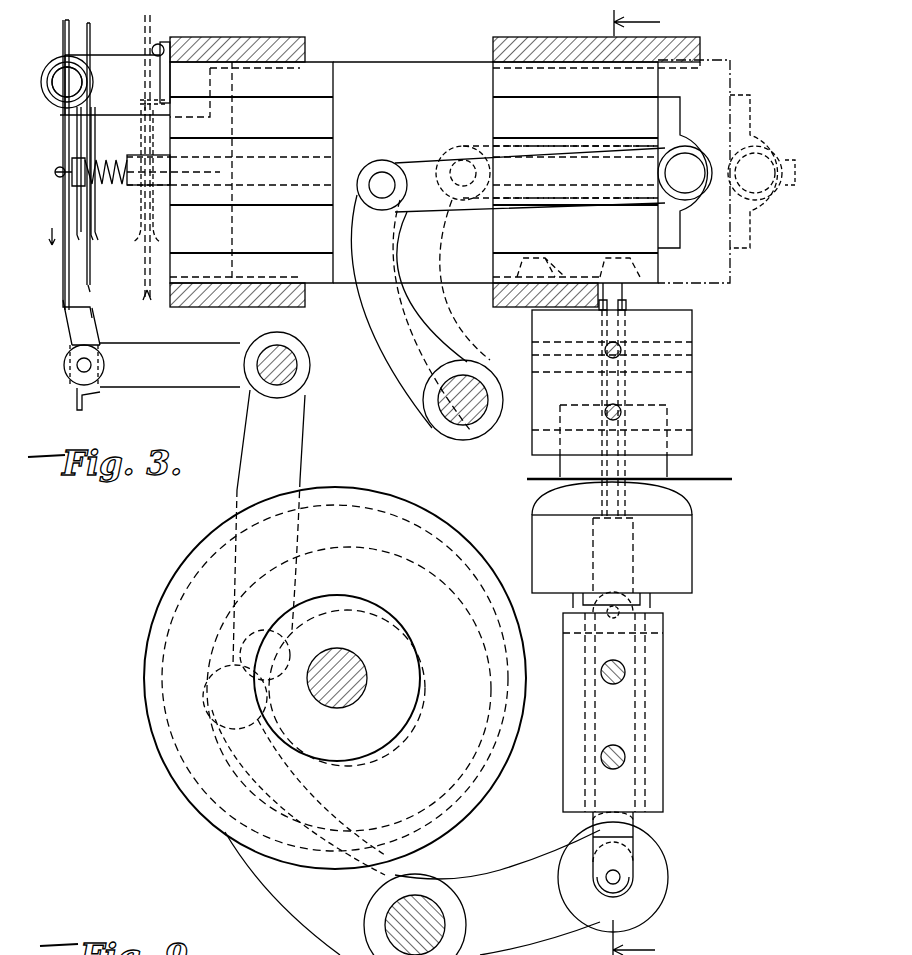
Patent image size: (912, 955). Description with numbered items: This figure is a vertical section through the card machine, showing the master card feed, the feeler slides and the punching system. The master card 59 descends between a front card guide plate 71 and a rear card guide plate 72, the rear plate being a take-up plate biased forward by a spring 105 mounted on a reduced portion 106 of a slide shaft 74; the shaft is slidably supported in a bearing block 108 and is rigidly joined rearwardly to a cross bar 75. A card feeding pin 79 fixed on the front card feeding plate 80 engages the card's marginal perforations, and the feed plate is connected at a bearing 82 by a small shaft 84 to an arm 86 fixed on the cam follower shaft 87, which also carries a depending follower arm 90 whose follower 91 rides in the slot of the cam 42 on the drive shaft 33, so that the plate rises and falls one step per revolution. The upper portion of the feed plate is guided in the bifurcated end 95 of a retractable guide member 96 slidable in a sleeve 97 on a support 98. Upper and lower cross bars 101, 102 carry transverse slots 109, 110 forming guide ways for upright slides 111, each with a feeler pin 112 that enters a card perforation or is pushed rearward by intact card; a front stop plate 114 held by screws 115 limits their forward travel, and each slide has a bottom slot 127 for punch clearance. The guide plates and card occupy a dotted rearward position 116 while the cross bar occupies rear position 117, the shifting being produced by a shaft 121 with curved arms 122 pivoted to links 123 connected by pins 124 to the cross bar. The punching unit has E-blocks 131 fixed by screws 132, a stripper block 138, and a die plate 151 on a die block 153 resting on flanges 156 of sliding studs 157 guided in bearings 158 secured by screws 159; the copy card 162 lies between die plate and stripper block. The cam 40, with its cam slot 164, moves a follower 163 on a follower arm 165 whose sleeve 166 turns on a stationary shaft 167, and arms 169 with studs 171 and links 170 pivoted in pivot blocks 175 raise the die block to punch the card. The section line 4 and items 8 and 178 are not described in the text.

The section line 4- 4 is at (645, 482).
The pivot shaft 8 is at (382, 172).
The drive shaft 33 is at (367, 678).
The cam 40 is at (144, 670).
The cam 42 is at (208, 722).
The card 59 is at (90, 292).
The card guide plate 71 is at (79, 252).
The card guide plate 72 is at (97, 246).
The slide shaft 74 is at (135, 155).
The cross bar 75 is at (680, 100).
The card feeding pin 79 is at (53, 170).
The front card feeding plate 80 is at (63, 280).
The bearing 82 is at (68, 332).
The shaft 84 is at (84, 365).
The arm 86 is at (155, 387).
The cam follower shaft 87 is at (300, 365).
The follower arm 90 is at (305, 452).
The follower 91 is at (263, 630).
The bifurcated end 95 is at (55, 90).
The guide member 96 is at (50, 68).
The sleeve 97 is at (60, 30).
The support 98 is at (100, 25).
The cross bar 101 is at (305, 47).
The cross bar 102 is at (300, 298).
The spring 105 is at (125, 188).
The reduced portion 106 is at (105, 165).
The bearing block 108 is at (333, 122).
The slot 109 is at (250, 62).
The slot 110 is at (290, 268).
The slide 111 is at (408, 58).
The feeler pin 112 is at (130, 195).
The front stop plate 114 is at (160, 80).
The screw 115 is at (152, 48).
The rearward position 116 is at (149, 172).
The rear position 117 is at (755, 118).
The shaft 121 is at (458, 415).
The curved arm 122 is at (390, 385).
The link 123 is at (445, 205).
The pin 124 is at (690, 190).
The slot 127 is at (620, 258).
The E-block 131 is at (692, 418).
The screw 132 is at (620, 356).
The stripper block 138 is at (667, 465).
The die plate 151 is at (690, 500).
The die block 153 is at (692, 543).
The flange 156 is at (573, 600).
The sliding stud 157 is at (630, 830).
The bearing 158 is at (663, 727).
The screw 159 is at (616, 683).
The copy card 162 is at (732, 479).
The follower 163 is at (250, 727).
The cam slot 164 is at (475, 650).
The follower arm 165 is at (282, 905).
The sleeve 166 is at (364, 918).
The stationary shaft 167 is at (445, 928).
The arm 169 is at (665, 860).
The link 170 is at (590, 845).
The stud 171 is at (620, 877).
The pivot block 175 is at (650, 600).
The terminals 178 is at (626, 297).